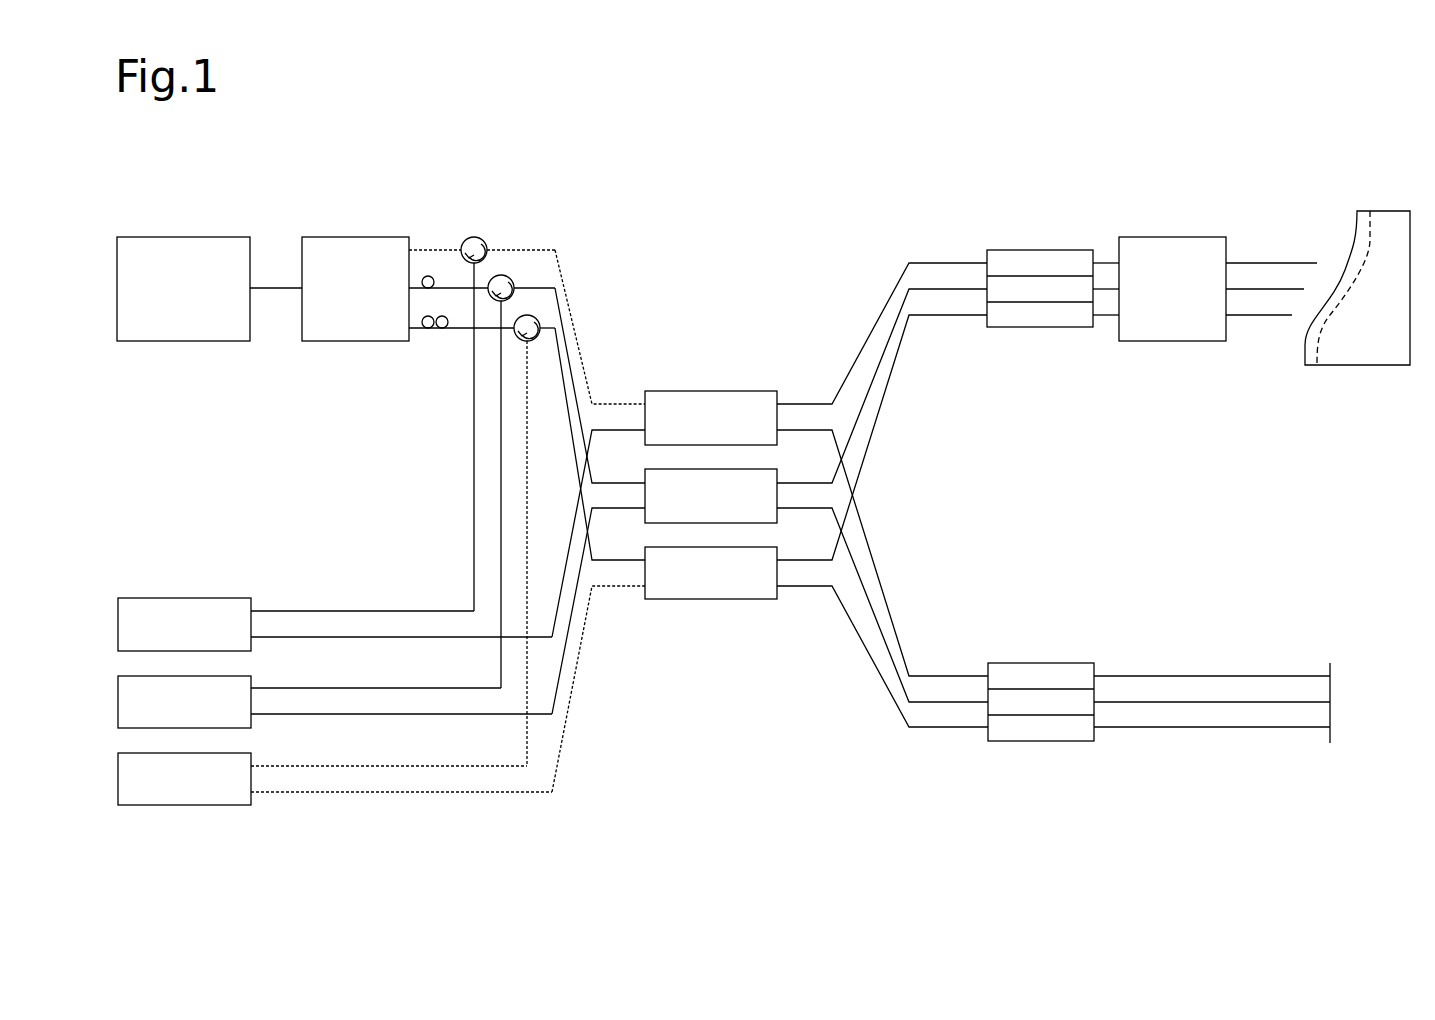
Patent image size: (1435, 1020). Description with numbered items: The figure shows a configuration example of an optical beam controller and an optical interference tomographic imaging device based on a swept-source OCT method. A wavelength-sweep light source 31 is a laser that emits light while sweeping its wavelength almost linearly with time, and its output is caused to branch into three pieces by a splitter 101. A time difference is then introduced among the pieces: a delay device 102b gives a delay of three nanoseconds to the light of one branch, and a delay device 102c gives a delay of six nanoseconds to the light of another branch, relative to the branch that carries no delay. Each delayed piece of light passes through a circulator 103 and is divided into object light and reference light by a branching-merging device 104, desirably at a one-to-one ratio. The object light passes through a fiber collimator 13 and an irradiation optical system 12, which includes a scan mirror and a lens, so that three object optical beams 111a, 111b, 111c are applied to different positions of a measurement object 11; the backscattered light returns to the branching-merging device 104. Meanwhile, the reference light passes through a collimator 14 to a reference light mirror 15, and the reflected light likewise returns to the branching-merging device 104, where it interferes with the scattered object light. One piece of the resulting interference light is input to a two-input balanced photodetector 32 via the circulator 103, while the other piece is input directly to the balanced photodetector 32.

The wavelength-sweep light source 31 is at (197, 237).
The splitter 101 is at (328, 237).
The delay device 102b is at (428, 275).
The delay device 102c is at (428, 335).
The circulator 103 is at (468, 233).
The branching-merging device 104 is at (723, 391).
The fiber collimator 13 is at (1012, 250).
The irradiation optical system 12 is at (1147, 237).
The object optical beam 111a is at (1250, 263).
The object optical beam 111b is at (1265, 289).
The object optical beam 111c is at (1278, 315).
The measurement object 11 is at (1380, 211).
The collimator 14 is at (1040, 742).
The reference light mirror 15 is at (1328, 742).
The two-input balanced photodetector 32 is at (171, 805).